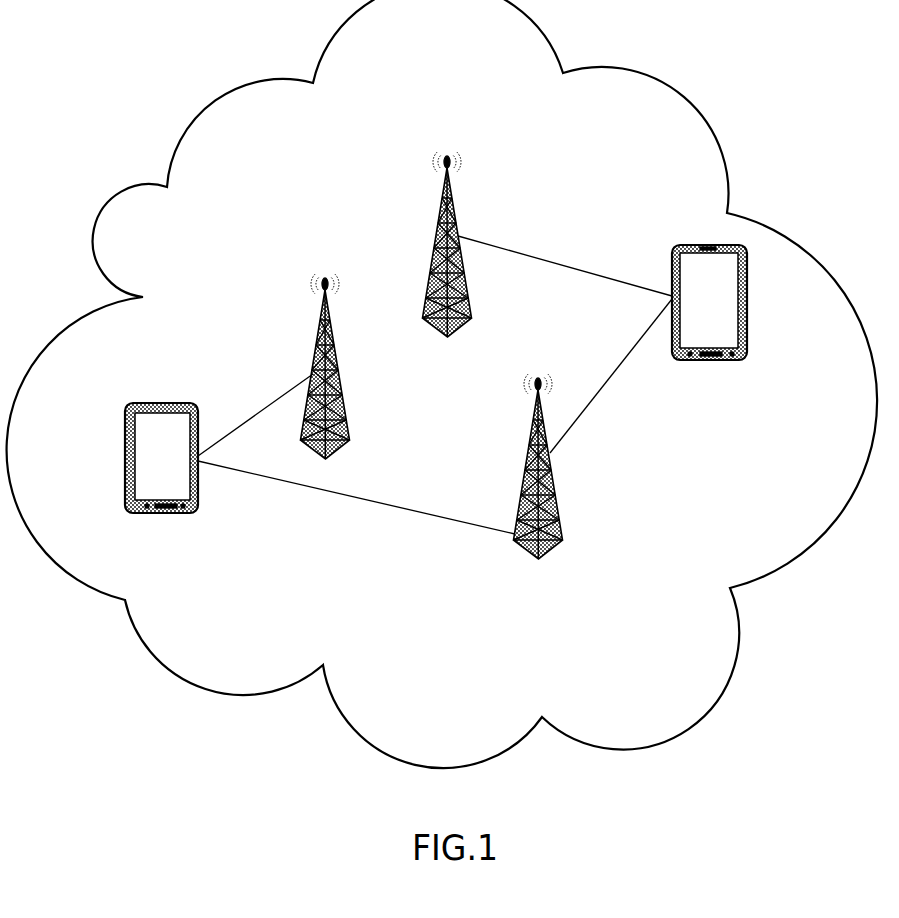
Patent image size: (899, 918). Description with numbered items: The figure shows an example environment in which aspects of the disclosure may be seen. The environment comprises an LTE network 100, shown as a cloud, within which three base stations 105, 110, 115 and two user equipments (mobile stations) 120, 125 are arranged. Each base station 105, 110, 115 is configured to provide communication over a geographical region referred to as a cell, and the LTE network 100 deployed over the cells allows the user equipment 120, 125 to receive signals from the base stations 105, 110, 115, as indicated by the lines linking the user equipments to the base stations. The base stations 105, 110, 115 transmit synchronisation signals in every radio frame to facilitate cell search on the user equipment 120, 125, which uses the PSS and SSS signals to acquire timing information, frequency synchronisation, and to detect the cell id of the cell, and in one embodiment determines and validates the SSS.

The LTE network 100 is at (180, 101).
The base station 105 is at (438, 298).
The base station 110 is at (347, 412).
The base station 115 is at (558, 505).
The user equipment 120 is at (125, 491).
The user equipment 125 is at (748, 335).